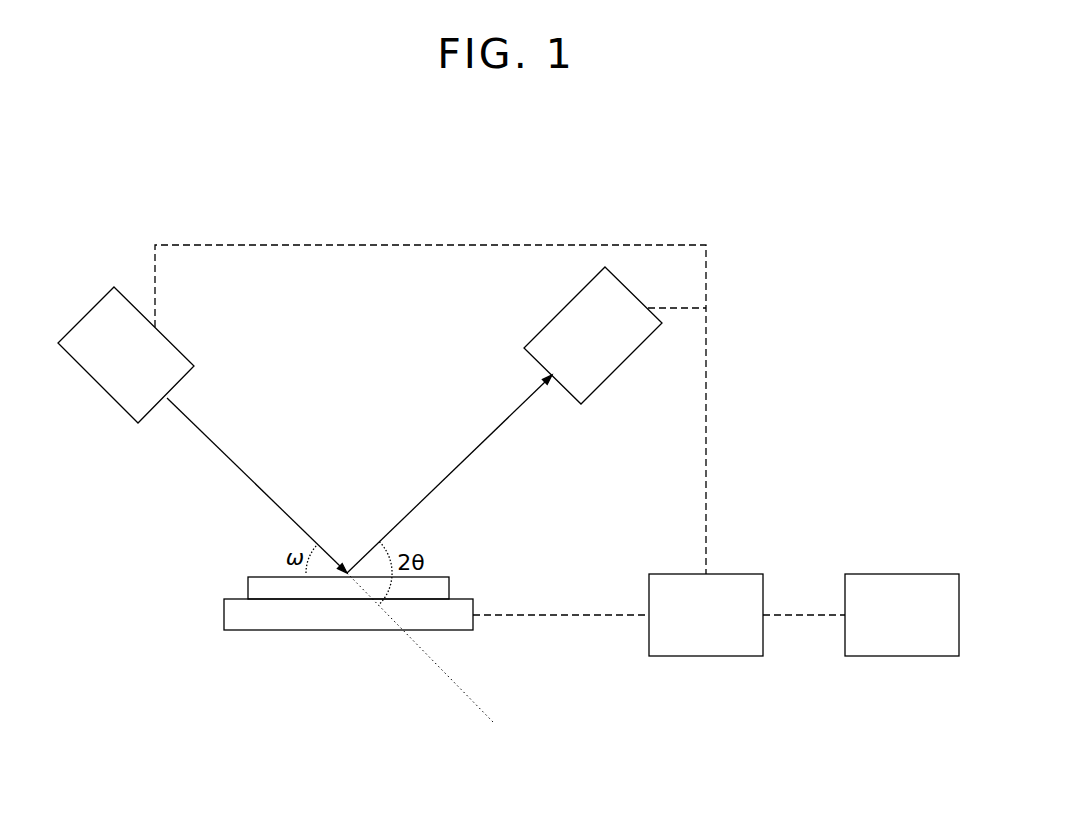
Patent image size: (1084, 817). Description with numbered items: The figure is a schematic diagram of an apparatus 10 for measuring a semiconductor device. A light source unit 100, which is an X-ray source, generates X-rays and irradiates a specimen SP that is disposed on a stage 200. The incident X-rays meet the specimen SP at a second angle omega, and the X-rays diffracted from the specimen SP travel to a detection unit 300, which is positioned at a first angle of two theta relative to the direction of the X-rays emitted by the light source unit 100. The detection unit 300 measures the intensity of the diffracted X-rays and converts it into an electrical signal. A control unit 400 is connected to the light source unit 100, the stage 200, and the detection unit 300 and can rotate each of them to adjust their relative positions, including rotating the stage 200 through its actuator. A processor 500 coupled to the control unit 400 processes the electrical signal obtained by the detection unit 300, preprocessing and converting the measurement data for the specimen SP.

The apparatus for measuring a semiconductor device 10 is at (935, 182).
The light source unit 100 is at (97, 382).
The stage 200 is at (228, 616).
The detection unit 300 is at (622, 363).
The control unit 400 is at (706, 657).
The processor 500 is at (902, 657).
The specimen SP is at (248, 590).